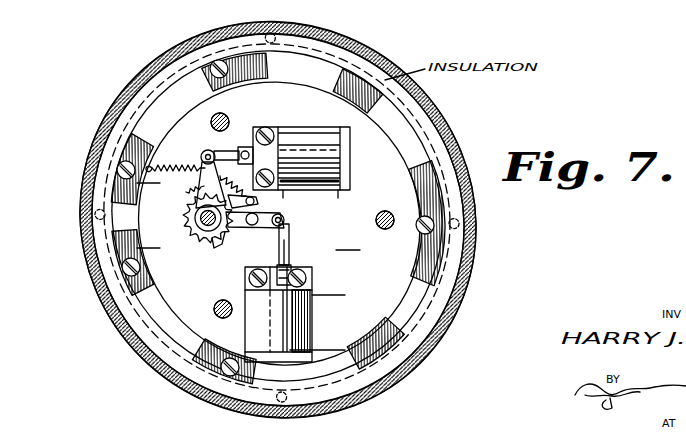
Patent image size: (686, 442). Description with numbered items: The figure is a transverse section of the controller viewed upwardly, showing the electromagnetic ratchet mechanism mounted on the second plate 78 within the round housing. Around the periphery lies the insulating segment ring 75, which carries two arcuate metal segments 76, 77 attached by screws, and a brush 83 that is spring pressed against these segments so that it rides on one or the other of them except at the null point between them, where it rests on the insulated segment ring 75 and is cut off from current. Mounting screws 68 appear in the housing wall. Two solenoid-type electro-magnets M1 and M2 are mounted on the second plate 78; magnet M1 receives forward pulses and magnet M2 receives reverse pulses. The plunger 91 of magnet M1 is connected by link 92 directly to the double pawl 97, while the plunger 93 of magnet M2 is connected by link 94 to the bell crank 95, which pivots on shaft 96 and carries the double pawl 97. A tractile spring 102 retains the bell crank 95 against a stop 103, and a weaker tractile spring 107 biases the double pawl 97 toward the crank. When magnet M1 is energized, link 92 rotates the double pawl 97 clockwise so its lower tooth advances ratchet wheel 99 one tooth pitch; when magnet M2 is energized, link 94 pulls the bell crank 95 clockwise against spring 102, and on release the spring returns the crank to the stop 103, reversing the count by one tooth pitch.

The segment ring 75 is at (108, 297).
The arcuate metal segment 76 is at (410, 146).
The arcuate metal segment 77 is at (413, 289).
The second plate 78 is at (348, 242).
The brush 83 is at (417, 228).
The mounting screws 68 is at (222, 113).
The electro-magnet M2 is at (304, 132).
The electro-magnet M1 is at (258, 331).
The plunger 91 is at (291, 264).
The link 92 is at (289, 238).
The plunger 93 is at (246, 148).
The link 94 is at (218, 151).
The bell crank 95 is at (193, 195).
The shaft 96 is at (197, 234).
The double pawl 97 is at (259, 231).
The ratchet wheel 99 is at (213, 244).
The tractile spring 102 is at (168, 160).
The stop 103 is at (199, 183).
The tractile spring 107 is at (237, 189).